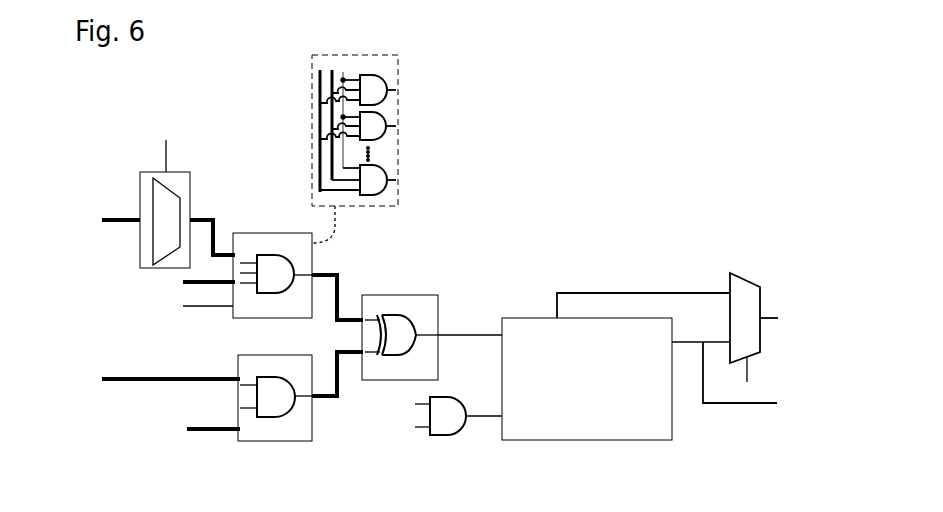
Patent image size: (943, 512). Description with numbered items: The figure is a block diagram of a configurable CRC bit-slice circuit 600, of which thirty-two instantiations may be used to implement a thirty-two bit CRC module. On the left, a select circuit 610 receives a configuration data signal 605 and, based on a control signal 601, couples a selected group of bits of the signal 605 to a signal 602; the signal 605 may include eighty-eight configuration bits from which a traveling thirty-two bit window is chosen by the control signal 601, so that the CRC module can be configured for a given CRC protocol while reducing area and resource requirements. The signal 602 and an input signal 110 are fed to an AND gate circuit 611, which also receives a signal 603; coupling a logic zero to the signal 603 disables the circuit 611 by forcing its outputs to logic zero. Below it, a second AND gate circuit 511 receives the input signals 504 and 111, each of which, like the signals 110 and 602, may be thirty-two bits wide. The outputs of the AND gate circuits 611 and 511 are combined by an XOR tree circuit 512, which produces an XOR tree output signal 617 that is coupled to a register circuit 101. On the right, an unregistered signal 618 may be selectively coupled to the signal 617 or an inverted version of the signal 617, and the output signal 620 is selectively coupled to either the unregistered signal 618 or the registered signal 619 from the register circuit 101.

The CRC bit-slice circuit 600 is at (702, 206).
The select circuit 610 is at (192, 182).
The control signal 601 is at (168, 160).
The configuration data signal 605 is at (122, 218).
The select circuit output signal 602 is at (208, 213).
The AND gate circuit 611 is at (293, 232).
The input signal 110 is at (195, 283).
The enable signal 603 is at (202, 307).
The AND gate circuit 511 is at (312, 427).
The input signal 504 is at (188, 377).
The input signal 111 is at (203, 427).
The XOR tree circuit 512 is at (412, 291).
The XOR tree output signal 617 is at (474, 335).
The register circuit 101 is at (610, 366).
The unregistered output signal 618 is at (582, 292).
The output signal 620 is at (773, 317).
The registered output signal 619 is at (717, 405).